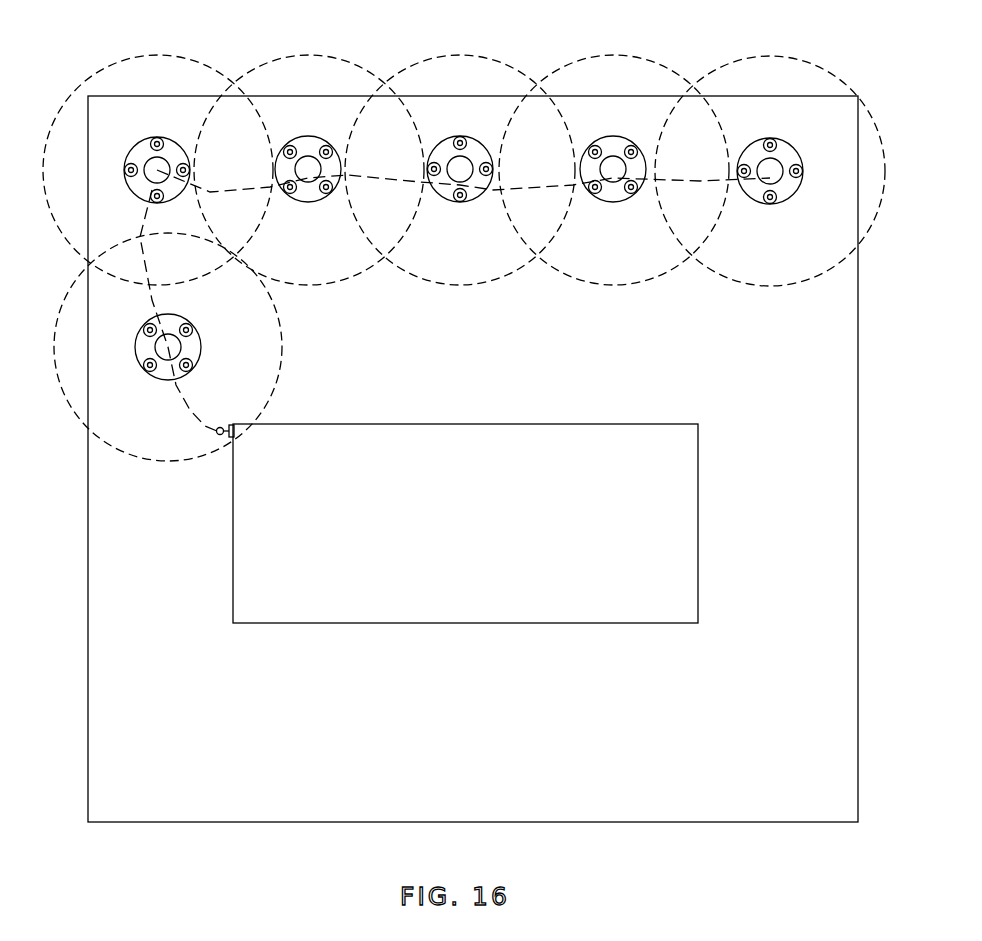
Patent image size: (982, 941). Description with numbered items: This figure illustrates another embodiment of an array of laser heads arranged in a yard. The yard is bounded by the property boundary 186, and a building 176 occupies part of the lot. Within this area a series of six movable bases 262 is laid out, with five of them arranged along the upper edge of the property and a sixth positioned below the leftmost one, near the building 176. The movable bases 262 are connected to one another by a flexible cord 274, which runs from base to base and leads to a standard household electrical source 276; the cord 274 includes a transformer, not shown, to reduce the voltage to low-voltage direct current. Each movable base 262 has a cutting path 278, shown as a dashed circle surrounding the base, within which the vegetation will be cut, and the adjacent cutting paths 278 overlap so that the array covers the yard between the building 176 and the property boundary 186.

The property boundary 186 is at (640, 94).
The building 176 is at (466, 536).
The movable base 262 is at (147, 150).
The cutting path 278 is at (207, 63).
The flexible cord 274 is at (192, 413).
The standard household electrical source 276 is at (233, 425).